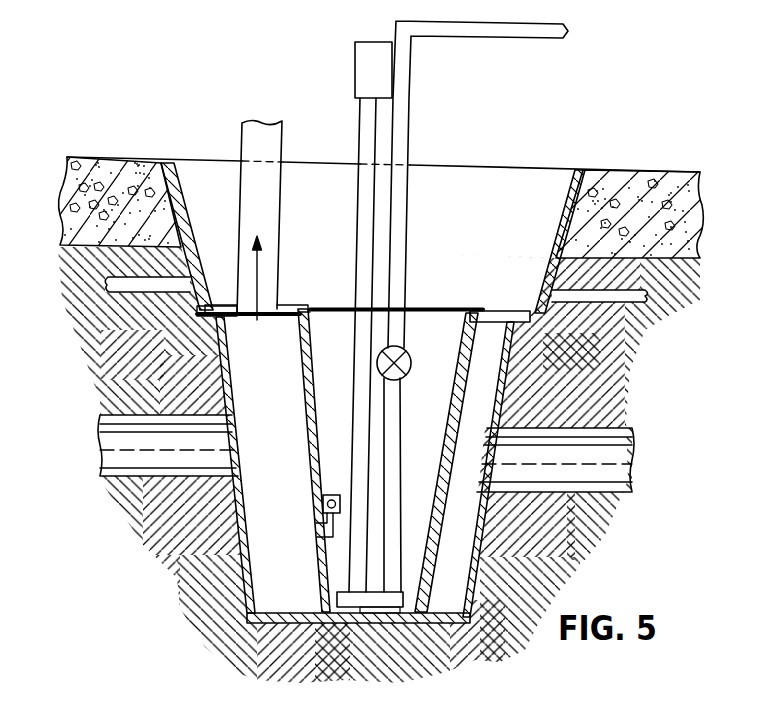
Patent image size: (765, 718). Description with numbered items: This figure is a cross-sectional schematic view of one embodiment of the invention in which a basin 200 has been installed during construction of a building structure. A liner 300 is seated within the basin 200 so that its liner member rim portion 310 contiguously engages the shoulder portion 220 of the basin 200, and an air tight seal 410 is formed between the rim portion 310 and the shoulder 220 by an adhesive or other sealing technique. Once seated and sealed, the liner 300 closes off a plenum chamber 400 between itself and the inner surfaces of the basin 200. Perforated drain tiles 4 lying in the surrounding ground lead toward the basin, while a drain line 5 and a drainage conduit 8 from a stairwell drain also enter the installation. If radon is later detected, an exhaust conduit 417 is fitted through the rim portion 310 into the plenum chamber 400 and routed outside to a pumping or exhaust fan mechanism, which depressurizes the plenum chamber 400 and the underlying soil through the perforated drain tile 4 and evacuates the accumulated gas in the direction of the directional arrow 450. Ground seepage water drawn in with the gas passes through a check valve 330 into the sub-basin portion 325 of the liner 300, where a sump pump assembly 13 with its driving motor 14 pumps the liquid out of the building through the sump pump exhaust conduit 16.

The perforated drain tile 4 is at (113, 453).
The drain line 5 is at (147, 283).
The drainage conduit 8 is at (622, 297).
The sump pump assembly 13 is at (375, 40).
The driving motor 14 is at (377, 70).
The sump pump exhaust conduit 16 is at (521, 33).
The basin 200 is at (533, 374).
The shoulder portion 220 is at (530, 332).
The liner 300 is at (452, 546).
The liner member rim portion 310 is at (483, 308).
The sub-basin portion 325 is at (458, 362).
The check valve 330 is at (319, 479).
The plenum chamber 400 is at (254, 560).
The air tight seal 410 is at (223, 297).
The exhaust conduit 417 is at (263, 140).
The directional arrow 450 is at (257, 322).